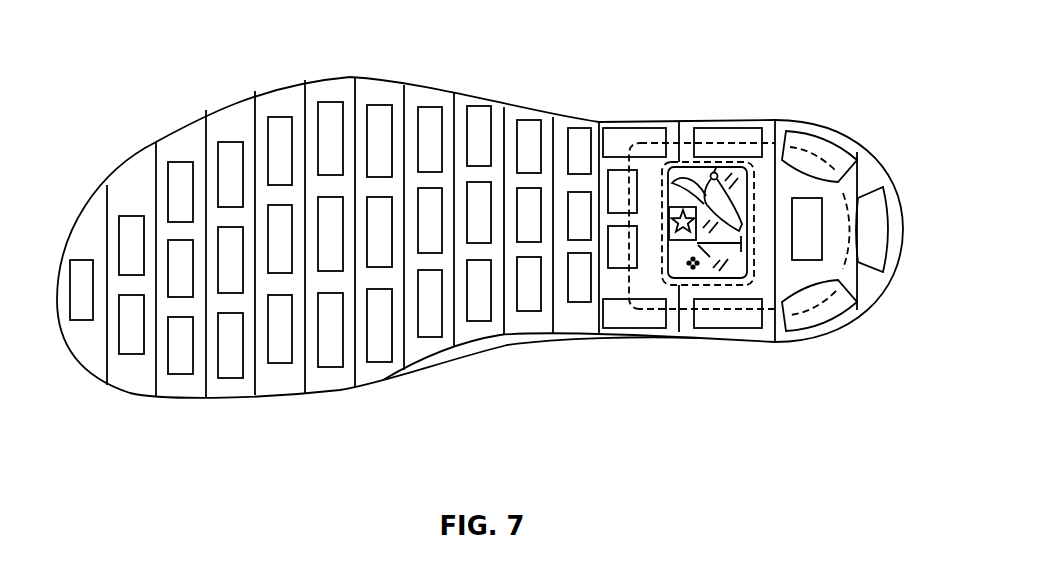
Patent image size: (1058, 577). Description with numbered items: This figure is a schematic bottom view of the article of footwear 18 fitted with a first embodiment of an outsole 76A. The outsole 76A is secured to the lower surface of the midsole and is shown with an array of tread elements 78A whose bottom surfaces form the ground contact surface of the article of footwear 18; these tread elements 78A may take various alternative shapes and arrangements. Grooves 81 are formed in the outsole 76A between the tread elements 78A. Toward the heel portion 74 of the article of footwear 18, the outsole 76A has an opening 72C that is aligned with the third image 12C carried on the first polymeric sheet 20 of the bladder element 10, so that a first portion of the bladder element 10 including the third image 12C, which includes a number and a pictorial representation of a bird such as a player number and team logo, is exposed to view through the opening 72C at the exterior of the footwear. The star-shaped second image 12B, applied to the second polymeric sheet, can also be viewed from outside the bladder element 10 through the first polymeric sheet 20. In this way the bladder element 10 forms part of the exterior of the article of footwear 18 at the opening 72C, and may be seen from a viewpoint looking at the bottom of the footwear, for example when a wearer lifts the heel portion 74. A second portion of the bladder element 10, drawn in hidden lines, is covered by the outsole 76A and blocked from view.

The bladder element 10 is at (740, 130).
The article of footwear 18 is at (808, 47).
The first polymeric sheet 20 is at (720, 276).
The second image 12B is at (675, 221).
The third image 12C is at (736, 250).
The opening 72C is at (735, 173).
The heel portion 74 is at (779, 150).
The outsole 76A is at (520, 315).
The tread elements 78A is at (327, 117).
The grooves 81 is at (207, 380).